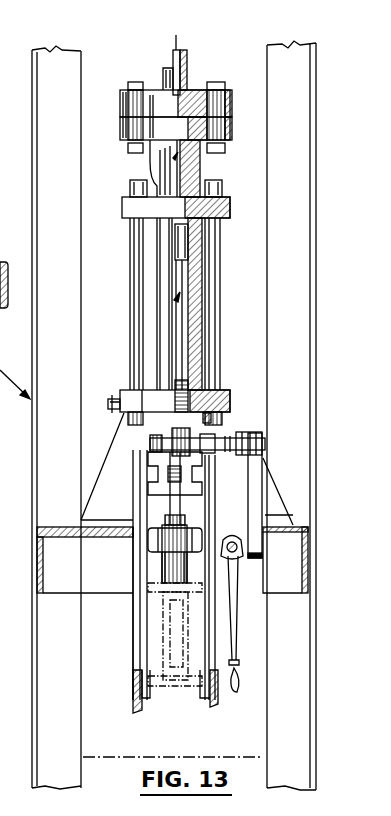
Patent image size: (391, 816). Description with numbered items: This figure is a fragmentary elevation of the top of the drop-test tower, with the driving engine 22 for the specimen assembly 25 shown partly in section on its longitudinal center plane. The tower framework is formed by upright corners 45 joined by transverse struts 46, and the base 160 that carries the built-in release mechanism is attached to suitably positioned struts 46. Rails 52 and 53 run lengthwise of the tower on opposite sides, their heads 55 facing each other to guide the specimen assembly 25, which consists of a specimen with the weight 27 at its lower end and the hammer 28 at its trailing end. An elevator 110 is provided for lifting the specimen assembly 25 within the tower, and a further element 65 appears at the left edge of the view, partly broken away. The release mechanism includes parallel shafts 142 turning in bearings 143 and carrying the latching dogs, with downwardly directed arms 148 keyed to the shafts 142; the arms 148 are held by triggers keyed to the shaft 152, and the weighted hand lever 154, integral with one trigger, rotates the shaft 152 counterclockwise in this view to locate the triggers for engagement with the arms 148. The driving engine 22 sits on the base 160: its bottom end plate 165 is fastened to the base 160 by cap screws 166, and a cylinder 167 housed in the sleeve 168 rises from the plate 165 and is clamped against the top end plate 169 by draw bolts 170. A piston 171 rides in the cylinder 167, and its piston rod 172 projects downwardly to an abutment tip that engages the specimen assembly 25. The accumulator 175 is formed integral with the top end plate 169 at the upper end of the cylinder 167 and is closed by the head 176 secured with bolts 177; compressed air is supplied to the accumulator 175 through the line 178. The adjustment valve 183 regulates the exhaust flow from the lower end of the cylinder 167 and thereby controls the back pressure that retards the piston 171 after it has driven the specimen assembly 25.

The driving engine 22 is at (223, 248).
The specimen assembly 25 is at (185, 507).
The weight 27 is at (155, 555).
The hammer 28 is at (167, 472).
The upright corners 45 is at (311, 284).
The transverse struts 46 is at (285, 568).
The rail 52 is at (148, 562).
The rail 53 is at (203, 620).
The heads 55 is at (197, 695).
The block 65 is at (15, 315).
The elevator 110 is at (168, 637).
The parallel shafts 142 is at (218, 438).
The bearings 143 is at (252, 430).
The arms 148 is at (262, 513).
The shaft 152 is at (236, 560).
The hand lever 154 is at (235, 640).
The base 160 is at (105, 473).
The bottom end plate 165 is at (147, 400).
The cap screws 166 is at (152, 382).
The cylinder 167 is at (197, 287).
The sleeve 168 is at (183, 325).
The top end plate 169 is at (143, 210).
The draw bolts 170 is at (135, 252).
The piston 171 is at (197, 243).
The piston rod 172 is at (155, 442).
The accumulator 175 is at (196, 162).
The head 176 is at (152, 98).
The bolts 177 is at (140, 82).
The line 178 is at (180, 58).
The adjustment valve 183 is at (108, 404).